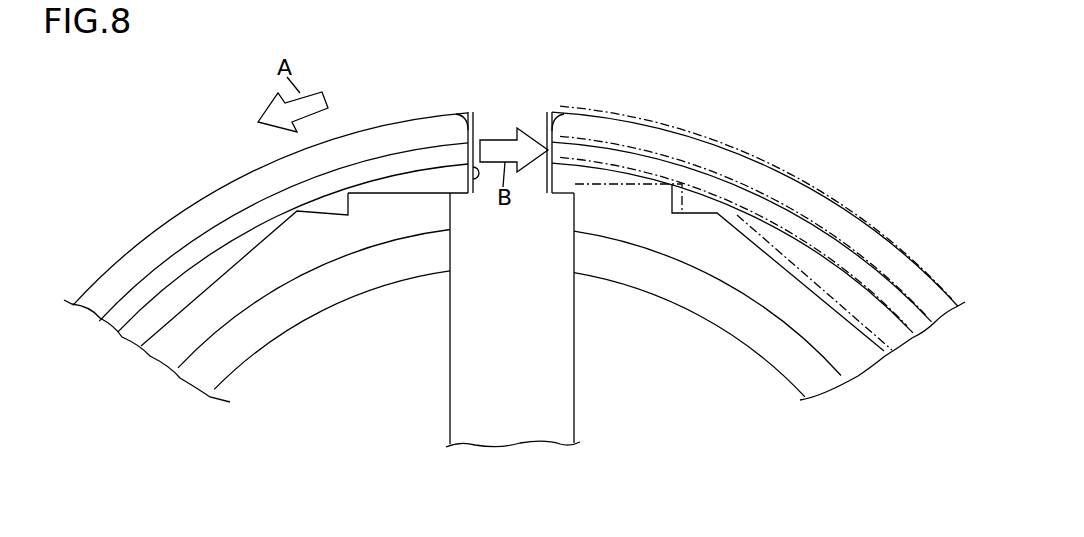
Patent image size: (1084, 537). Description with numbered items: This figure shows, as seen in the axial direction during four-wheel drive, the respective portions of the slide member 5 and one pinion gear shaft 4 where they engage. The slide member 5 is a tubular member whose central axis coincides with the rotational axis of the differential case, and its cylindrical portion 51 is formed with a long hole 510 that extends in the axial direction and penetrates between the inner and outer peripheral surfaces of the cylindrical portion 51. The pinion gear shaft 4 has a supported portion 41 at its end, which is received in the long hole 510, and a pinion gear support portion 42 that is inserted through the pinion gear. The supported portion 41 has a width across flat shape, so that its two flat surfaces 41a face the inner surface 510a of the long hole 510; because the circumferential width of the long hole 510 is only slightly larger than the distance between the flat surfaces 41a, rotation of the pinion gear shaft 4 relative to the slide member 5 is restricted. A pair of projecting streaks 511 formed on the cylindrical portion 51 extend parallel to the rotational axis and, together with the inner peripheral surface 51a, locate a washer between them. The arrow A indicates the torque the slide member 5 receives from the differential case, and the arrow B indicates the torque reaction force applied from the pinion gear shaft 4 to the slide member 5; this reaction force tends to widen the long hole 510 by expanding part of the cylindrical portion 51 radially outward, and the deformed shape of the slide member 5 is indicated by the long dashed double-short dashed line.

The pinion gear shaft 4 is at (450, 385).
The supported portion 41 is at (500, 127).
The flat surface 41a is at (462, 122).
The pinion gear support portion 42 is at (558, 355).
The slide member 5 is at (827, 178).
The cylindrical portion 51 is at (222, 183).
The inner peripheral surface 51a is at (400, 194).
The long hole 510 is at (493, 108).
The inner surface 510a is at (468, 162).
The projecting streak 511 is at (343, 210).